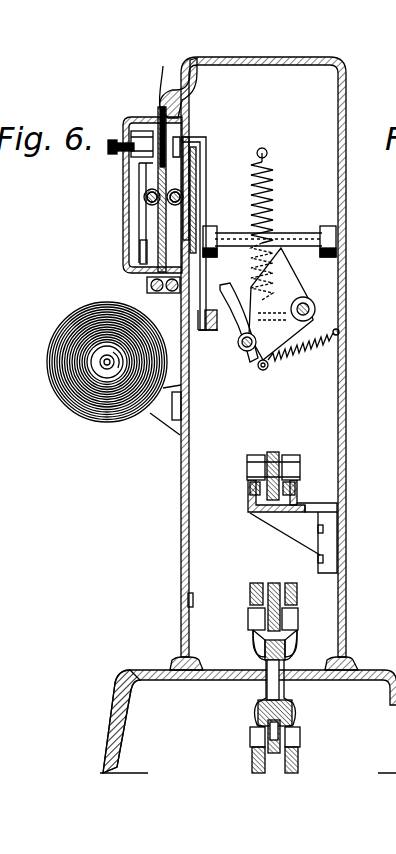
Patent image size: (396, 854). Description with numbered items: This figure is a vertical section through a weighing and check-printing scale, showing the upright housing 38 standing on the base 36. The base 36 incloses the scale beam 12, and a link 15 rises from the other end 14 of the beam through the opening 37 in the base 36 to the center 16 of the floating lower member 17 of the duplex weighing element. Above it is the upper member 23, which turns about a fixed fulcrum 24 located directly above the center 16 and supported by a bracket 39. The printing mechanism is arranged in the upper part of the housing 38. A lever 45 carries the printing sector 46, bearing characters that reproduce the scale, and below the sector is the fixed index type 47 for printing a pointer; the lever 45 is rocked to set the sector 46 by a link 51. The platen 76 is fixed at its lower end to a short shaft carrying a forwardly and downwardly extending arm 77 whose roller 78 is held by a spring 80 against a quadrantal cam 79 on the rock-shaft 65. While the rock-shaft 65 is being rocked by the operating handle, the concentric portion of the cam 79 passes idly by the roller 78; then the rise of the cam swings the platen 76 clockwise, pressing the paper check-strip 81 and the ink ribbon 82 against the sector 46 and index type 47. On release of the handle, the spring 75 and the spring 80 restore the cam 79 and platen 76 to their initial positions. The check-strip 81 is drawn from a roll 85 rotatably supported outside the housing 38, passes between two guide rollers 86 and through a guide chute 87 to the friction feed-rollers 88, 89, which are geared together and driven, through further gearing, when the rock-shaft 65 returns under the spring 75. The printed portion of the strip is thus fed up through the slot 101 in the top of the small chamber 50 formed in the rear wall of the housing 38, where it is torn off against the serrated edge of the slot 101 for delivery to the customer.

The scale beam 12 is at (298, 765).
The other end of the beam 14 is at (300, 735).
The link 15 is at (267, 667).
The center of the floating lower lever 16 is at (250, 615).
The floating lower member 17 is at (275, 583).
The upper member 23 is at (270, 455).
The fulcrum 24 is at (247, 470).
The base 36 is at (130, 707).
The opening 37 is at (231, 677).
The upright housing 38 is at (343, 373).
The bracket 39 is at (280, 525).
The lever 45 is at (203, 163).
The printing sector 46 is at (185, 140).
The index type 47 is at (178, 150).
The small chamber 50 is at (127, 105).
The link 51 is at (213, 337).
The rock-shaft 65 is at (316, 309).
The spring 75 is at (274, 183).
The platen 76 is at (137, 178).
The arm 77 is at (259, 370).
The roller 78 is at (245, 353).
The quadrantal cam 79 is at (297, 270).
The spring 80 is at (295, 357).
The paper check-strip 81 is at (133, 170).
The ink ribbon 82 is at (170, 160).
The roll 85 is at (50, 342).
The guide rollers 86 is at (147, 286).
The guide chute 87 is at (160, 262).
The friction feed-roller 88 is at (144, 200).
The friction feed-roller 89 is at (183, 198).
The slot 101 is at (168, 82).